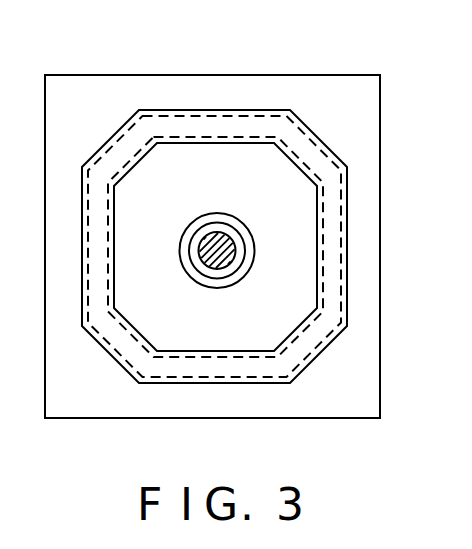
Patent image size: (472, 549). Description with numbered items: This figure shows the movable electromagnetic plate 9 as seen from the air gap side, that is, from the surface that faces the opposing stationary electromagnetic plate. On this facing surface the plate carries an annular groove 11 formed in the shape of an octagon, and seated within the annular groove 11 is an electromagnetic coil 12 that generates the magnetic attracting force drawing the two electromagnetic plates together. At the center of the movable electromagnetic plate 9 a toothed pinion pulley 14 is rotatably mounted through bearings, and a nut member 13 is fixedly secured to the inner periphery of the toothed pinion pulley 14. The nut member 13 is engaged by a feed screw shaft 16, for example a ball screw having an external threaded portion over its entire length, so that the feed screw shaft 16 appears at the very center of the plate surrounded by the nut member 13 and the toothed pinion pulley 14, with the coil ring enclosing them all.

The movable electromagnetic plate 9 is at (380, 123).
The annular groove 11 is at (180, 114).
The electromagnetic coil 12 is at (254, 125).
The nut member 13 is at (217, 273).
The toothed pinion pulley 14 is at (190, 238).
The feed screw shaft 16 is at (225, 242).